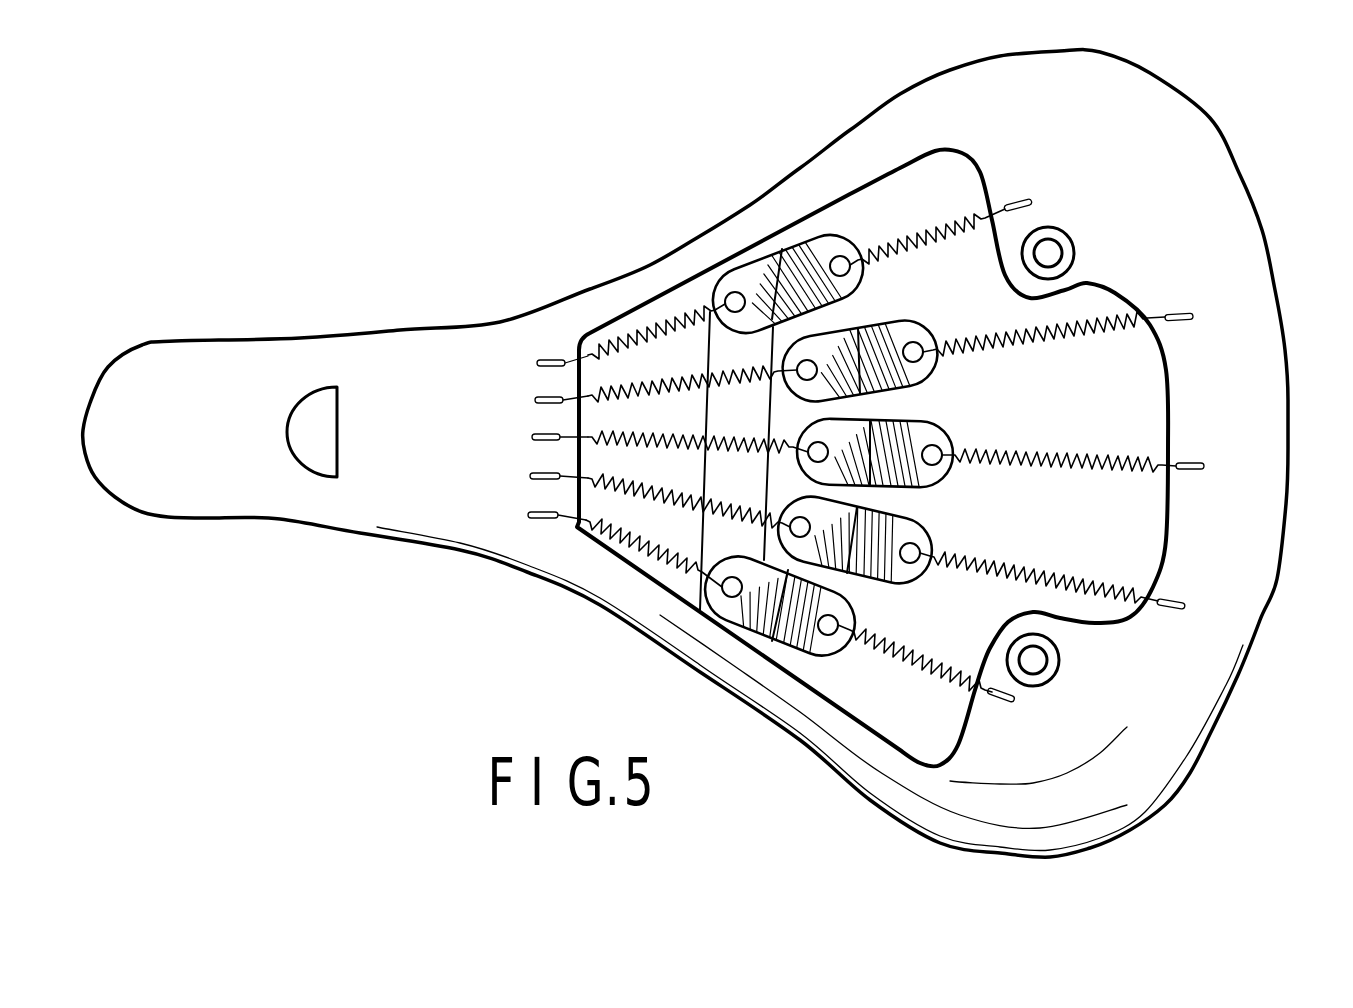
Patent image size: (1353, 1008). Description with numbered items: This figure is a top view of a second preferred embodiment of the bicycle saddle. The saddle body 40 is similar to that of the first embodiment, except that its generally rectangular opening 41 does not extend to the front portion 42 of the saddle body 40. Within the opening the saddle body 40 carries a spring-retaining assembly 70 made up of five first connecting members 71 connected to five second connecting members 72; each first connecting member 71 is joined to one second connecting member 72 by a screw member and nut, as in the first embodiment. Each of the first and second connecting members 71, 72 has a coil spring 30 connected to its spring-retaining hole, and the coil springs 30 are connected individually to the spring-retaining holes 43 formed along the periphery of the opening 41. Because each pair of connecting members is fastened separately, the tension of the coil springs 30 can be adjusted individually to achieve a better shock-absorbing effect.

The coil spring 30 is at (919, 214).
The saddle body 40 is at (1214, 761).
The generally rectangular opening 41 is at (868, 740).
The front portion 42 is at (362, 517).
The spring-retaining hole 43 is at (551, 358).
The spring-retaining assembly 70 is at (837, 222).
The first connecting member 71 is at (757, 272).
The second connecting member 72 is at (810, 250).